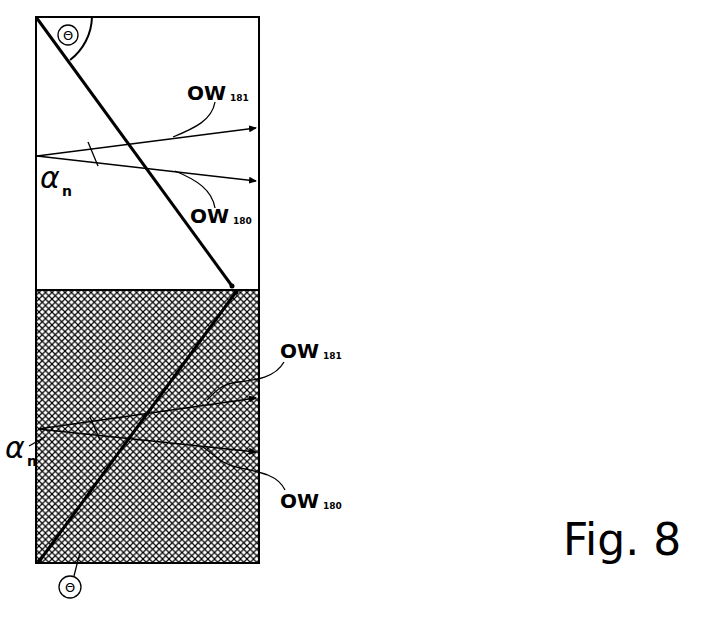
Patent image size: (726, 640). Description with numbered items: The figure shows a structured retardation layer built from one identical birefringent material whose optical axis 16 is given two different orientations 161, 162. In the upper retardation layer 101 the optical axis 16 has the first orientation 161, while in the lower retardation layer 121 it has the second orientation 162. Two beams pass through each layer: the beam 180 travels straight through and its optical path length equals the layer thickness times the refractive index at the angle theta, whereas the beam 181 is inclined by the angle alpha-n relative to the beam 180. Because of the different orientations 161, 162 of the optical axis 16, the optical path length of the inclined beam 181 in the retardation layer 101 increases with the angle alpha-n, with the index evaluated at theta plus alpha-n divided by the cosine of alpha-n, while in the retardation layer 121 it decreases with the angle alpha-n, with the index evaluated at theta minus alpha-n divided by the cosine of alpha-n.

The retardation layer 101 is at (259, 53).
The retardation layer 121 is at (259, 536).
The optical axis 16 is at (94, 94).
The orientation of the optical axis 161 is at (213, 256).
The orientation of the optical axis 162 is at (228, 322).
The beam 181 is at (170, 273).
The beam 180 is at (170, 310).